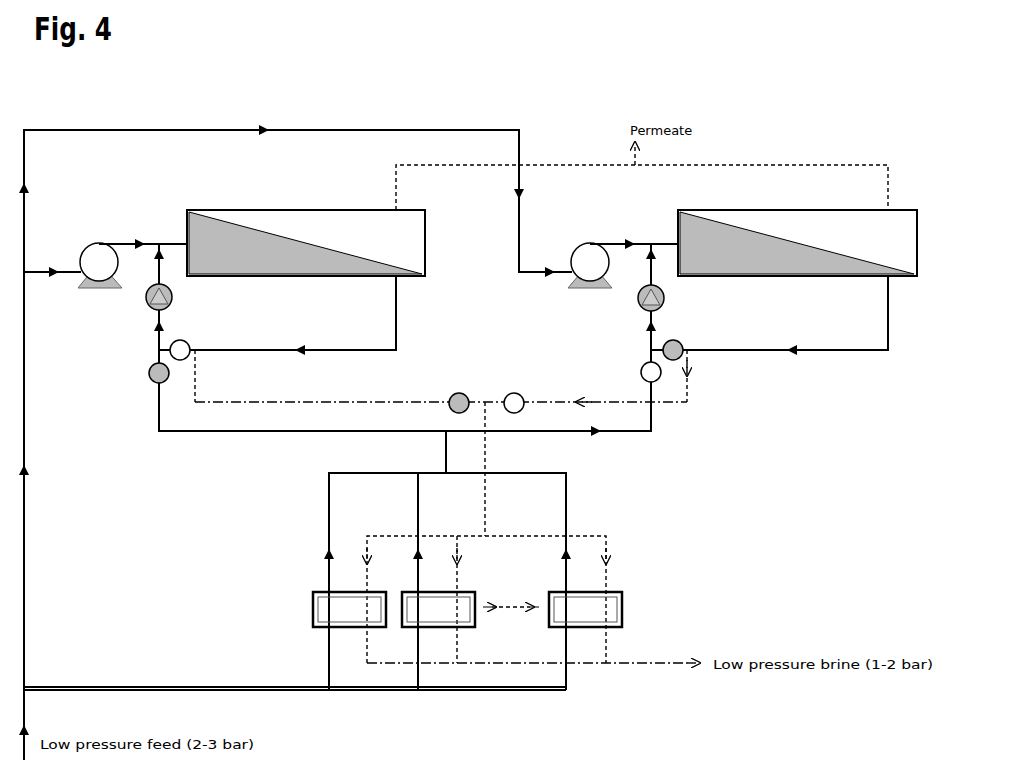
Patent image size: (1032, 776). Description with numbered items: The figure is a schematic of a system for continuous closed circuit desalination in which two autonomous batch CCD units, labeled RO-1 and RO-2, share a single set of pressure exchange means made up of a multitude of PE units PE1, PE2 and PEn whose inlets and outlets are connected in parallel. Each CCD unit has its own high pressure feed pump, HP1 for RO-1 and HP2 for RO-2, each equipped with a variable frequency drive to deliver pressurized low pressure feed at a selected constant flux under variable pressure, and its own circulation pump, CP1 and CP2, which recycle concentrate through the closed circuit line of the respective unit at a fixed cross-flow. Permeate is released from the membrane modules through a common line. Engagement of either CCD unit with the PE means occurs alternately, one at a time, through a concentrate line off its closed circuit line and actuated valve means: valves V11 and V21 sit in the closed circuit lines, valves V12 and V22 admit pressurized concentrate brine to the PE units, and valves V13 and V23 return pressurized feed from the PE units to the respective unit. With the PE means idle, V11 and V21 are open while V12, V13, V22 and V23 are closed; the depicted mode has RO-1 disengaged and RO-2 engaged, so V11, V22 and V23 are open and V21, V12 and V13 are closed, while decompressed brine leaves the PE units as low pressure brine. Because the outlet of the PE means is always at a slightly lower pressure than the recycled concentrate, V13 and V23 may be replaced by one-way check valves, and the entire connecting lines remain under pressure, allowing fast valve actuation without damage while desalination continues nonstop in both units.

The high pressure feed pump HP1 is at (130, 275).
The circulation pump CP1 is at (180, 277).
The first batch CCD unit RO-1 is at (306, 233).
The valve means V11 is at (185, 341).
The valve means V13 is at (144, 373).
The valve means V12 is at (456, 394).
The valve means V22 is at (512, 394).
The valve means V23 is at (635, 372).
The valve means V21 is at (769, 318).
The high pressure feed pump HP2 is at (622, 275).
The circulation pump CP2 is at (672, 277).
The second batch CCD unit RO-2 is at (797, 233).
The pressure exchange unit PE1 is at (349, 609).
The pressure exchange unit PE2 is at (438, 609).
The n-th pressure exchange unit PEn is at (585, 609).